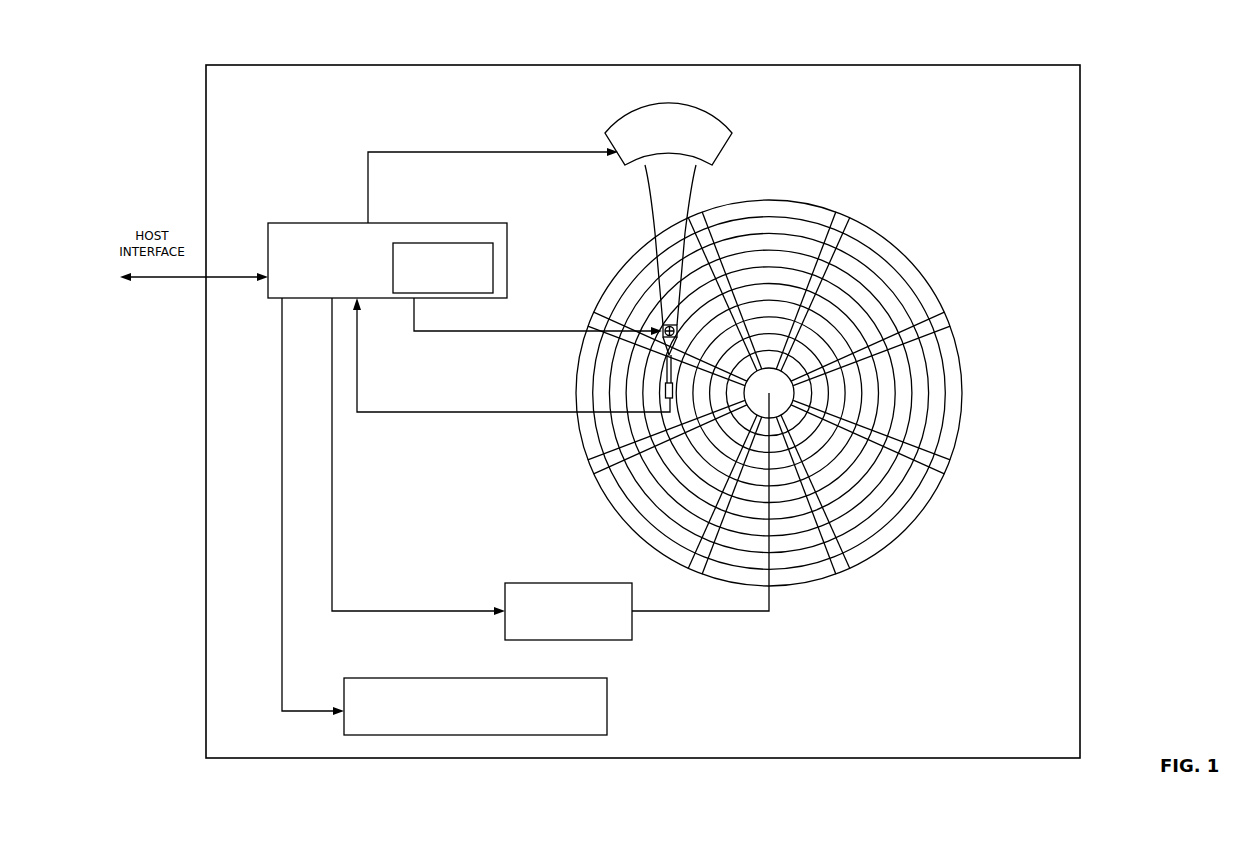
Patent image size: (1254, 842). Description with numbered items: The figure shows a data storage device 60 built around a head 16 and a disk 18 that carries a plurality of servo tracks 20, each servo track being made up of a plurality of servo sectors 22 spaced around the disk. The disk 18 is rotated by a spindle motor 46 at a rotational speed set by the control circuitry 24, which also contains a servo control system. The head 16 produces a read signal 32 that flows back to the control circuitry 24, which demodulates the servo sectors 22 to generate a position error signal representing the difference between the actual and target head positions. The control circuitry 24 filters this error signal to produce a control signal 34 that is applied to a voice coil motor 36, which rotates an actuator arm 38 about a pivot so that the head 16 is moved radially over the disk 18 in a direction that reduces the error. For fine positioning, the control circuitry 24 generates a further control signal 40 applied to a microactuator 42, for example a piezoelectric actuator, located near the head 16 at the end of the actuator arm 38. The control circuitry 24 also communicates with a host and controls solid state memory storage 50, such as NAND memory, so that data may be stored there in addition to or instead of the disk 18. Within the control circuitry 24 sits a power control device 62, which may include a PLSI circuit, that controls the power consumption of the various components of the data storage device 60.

The data storage device 60 is at (992, 80).
The control circuitry 24 is at (406, 223).
The power control device 62 is at (482, 243).
The control signal 34 is at (368, 201).
The voice coil motor 36 is at (622, 165).
The actuator arm 38 is at (655, 228).
The microactuator 42 is at (689, 326).
The head 16 is at (654, 386).
The control signal 40 is at (506, 331).
The read signal 32 is at (506, 412).
The spindle motor 46 is at (556, 583).
The solid state memory storage 50 is at (455, 678).
The disk 18 is at (906, 243).
The servo tracks 20 is at (768, 232).
The servo sectors 22 is at (836, 592).